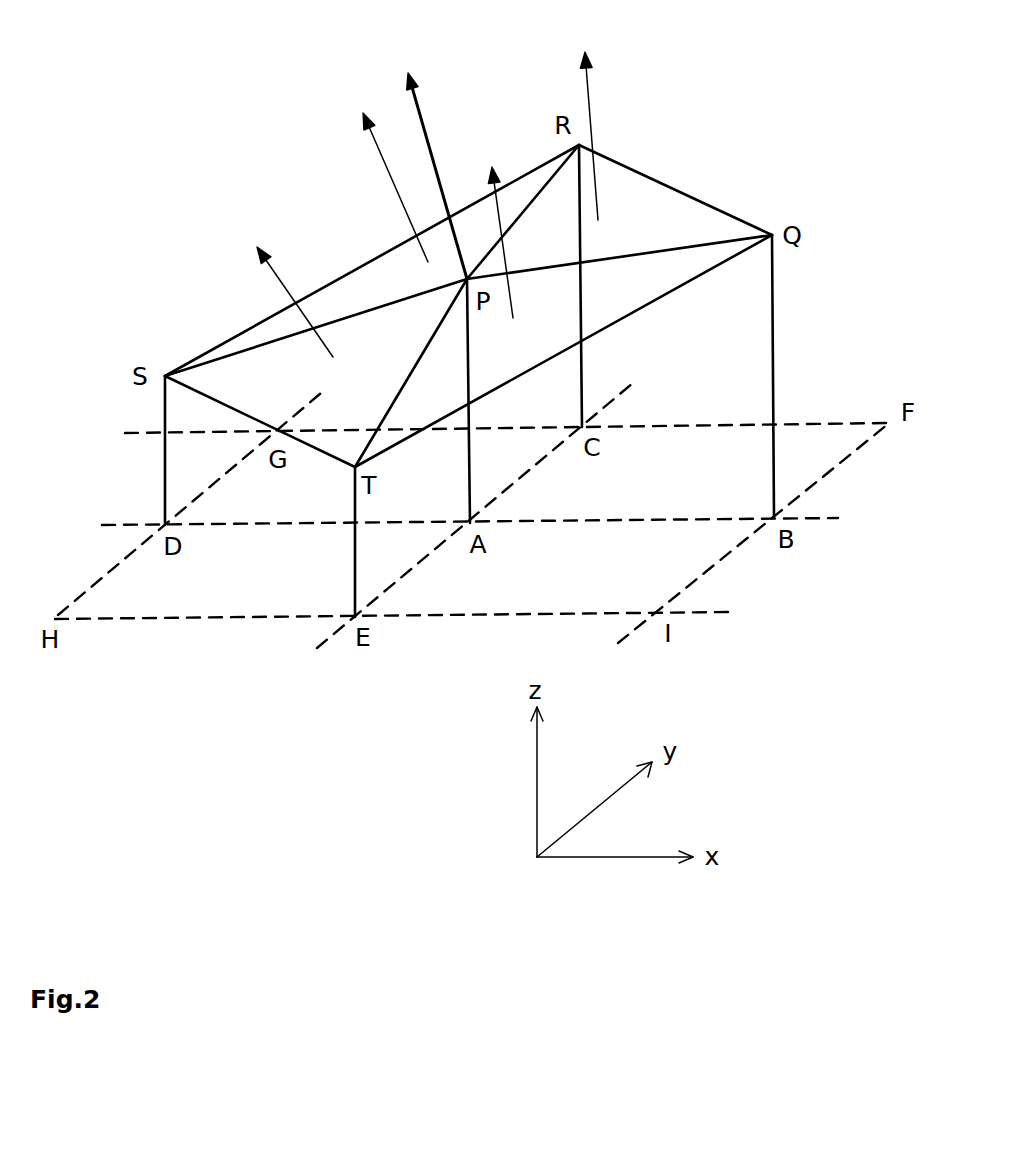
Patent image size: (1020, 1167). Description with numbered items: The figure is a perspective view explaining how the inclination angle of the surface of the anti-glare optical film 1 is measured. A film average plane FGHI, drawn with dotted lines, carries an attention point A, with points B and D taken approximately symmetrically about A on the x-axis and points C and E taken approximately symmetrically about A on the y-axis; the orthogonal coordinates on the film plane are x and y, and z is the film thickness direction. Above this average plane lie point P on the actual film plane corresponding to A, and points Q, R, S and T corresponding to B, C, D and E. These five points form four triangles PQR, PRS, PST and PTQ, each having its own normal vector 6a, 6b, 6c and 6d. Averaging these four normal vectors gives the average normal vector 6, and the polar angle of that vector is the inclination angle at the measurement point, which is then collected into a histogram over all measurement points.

The anti-glare optical film 1 is at (285, 580).
The average normal vector 6 is at (427, 156).
The normal vector 6a is at (578, 117).
The normal vector 6b is at (372, 174).
The normal vector 6c is at (275, 289).
The normal vector 6d is at (495, 223).